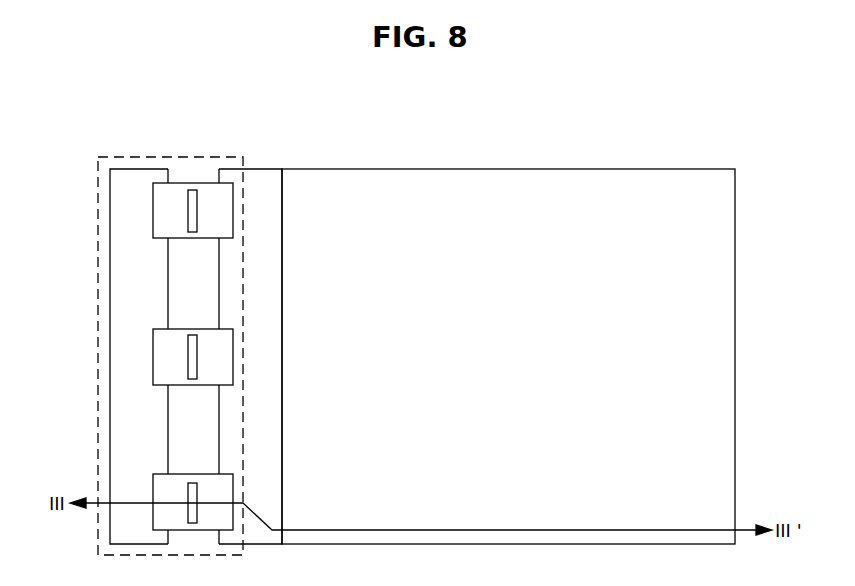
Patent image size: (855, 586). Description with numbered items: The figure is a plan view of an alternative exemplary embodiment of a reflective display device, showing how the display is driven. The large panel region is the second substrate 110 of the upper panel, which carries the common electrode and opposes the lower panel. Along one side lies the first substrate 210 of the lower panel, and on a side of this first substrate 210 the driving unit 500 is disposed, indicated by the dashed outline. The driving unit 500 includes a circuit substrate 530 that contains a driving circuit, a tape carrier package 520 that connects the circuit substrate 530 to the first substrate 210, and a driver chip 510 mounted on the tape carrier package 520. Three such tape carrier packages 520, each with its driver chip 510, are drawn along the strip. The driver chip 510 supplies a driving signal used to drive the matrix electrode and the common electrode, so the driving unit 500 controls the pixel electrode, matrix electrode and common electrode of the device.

The second substrate 110 is at (483, 193).
The first substrate 210 is at (263, 195).
The driving unit 500 is at (97, 320).
The driver chip 510 is at (193, 200).
The tape carrier package 520 is at (177, 195).
The circuit substrate 530 is at (133, 178).